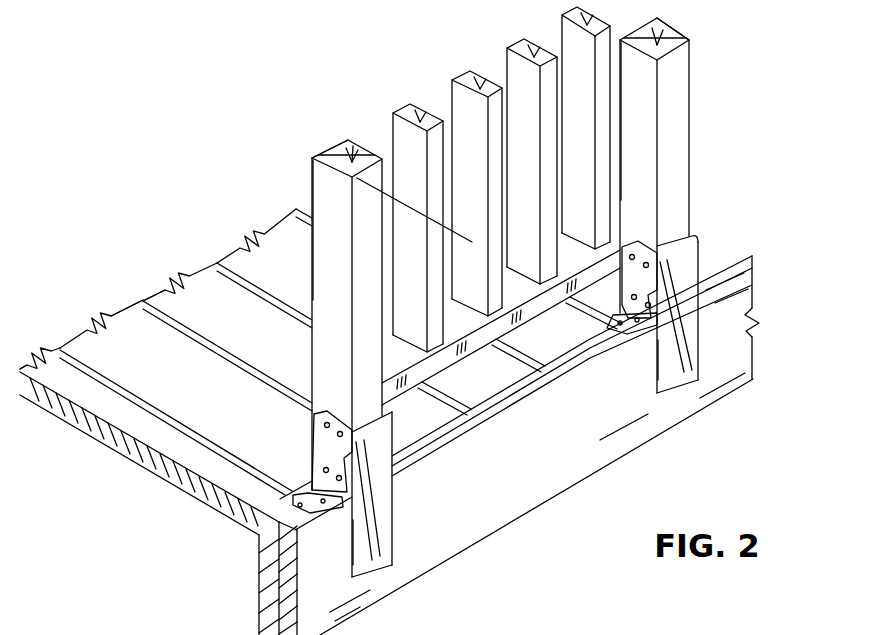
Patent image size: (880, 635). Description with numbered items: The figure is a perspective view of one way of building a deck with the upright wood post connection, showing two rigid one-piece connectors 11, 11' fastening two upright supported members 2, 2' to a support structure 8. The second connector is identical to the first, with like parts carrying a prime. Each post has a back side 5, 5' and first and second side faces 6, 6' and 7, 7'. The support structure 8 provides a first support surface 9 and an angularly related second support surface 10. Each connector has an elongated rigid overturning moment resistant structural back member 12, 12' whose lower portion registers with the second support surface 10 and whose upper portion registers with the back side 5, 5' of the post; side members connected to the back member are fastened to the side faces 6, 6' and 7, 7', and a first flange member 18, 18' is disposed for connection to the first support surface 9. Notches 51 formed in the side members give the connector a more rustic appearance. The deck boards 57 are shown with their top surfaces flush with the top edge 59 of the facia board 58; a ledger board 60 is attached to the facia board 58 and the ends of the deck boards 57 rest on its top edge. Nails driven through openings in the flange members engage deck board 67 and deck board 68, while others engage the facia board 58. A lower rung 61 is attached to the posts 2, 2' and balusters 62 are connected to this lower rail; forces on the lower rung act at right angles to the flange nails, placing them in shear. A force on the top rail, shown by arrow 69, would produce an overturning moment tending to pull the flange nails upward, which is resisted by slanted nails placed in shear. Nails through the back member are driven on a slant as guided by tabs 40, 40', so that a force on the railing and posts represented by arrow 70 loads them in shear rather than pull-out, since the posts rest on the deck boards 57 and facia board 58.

The upright supported member 2 is at (300, 315).
The upright supported member 2' is at (693, 165).
The back side 5 is at (364, 377).
The back side 5' is at (670, 226).
The first side face 6 is at (327, 249).
The first side face 6' is at (632, 121).
The second side face 7 is at (339, 123).
The second side face 7' is at (696, 43).
The support structure 8 is at (132, 473).
The first support surface 9 is at (201, 403).
The second support surface 10 is at (540, 469).
The rigid one-piece connector 11 is at (374, 445).
The rigid one-piece connector 11' is at (687, 250).
The elongated rigid overturning moment resistant structural back member 12 is at (409, 494).
The elongated rigid overturning moment resistant structural back member 12' is at (724, 308).
The first flange member 18 is at (299, 472).
The first flange member 18' is at (601, 321).
The tab 40 is at (330, 557).
The tab 40' is at (619, 379).
The notch 51 is at (320, 428).
The deck board 57 is at (119, 300).
The facia board 58 is at (746, 403).
The top edge 59 is at (520, 388).
The ledger board 60 is at (258, 558).
The lower rung 61 is at (452, 345).
The balusters 62 is at (567, 14).
The deck board 67 is at (157, 291).
The deck board 68 is at (52, 352).
The arrow 69 is at (308, 146).
The arrow 70 is at (405, 204).